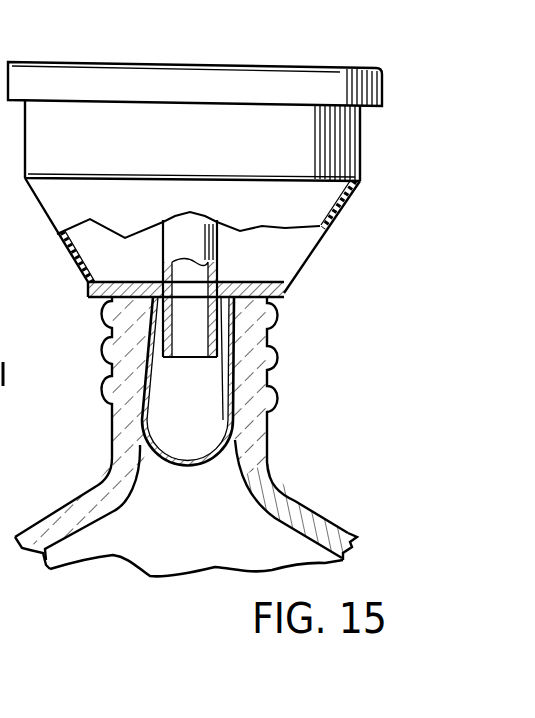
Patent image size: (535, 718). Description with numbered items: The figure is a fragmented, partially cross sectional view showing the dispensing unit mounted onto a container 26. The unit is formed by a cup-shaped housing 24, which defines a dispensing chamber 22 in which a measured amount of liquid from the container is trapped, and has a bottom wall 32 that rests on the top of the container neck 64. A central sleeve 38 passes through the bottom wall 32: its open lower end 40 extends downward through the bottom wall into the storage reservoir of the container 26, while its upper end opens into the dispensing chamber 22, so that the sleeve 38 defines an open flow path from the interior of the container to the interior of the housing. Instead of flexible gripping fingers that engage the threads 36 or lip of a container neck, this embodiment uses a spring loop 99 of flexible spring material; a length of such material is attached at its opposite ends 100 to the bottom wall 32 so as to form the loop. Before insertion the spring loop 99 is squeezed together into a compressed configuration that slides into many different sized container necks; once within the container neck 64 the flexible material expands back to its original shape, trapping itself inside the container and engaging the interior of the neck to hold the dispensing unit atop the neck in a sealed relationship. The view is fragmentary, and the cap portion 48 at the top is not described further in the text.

The cap 48 is at (196, 75).
The cup-shaped housing 24 is at (378, 156).
The central sleeve 38 is at (187, 237).
The dispensing chamber 22 is at (266, 251).
The bottom wall 32 is at (280, 299).
The opposite ends 100 is at (152, 313).
The threads 36 is at (267, 358).
The open lower end 40 is at (212, 358).
The container neck 64 is at (255, 476).
The spring loop 99 is at (180, 468).
The container 26 is at (348, 532).